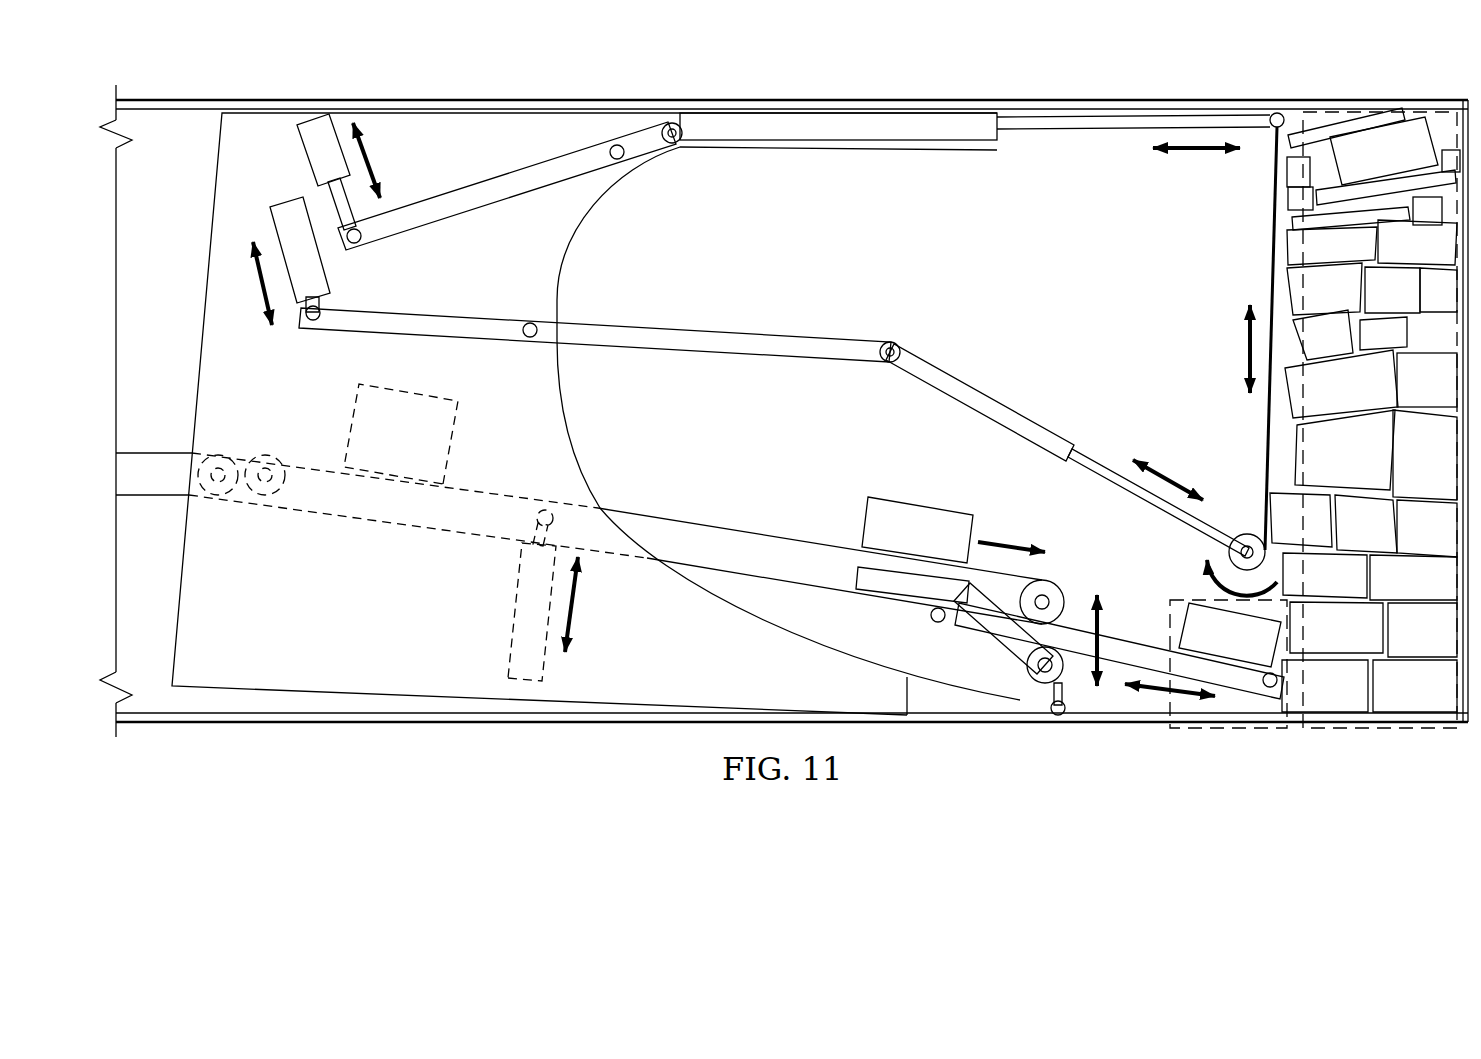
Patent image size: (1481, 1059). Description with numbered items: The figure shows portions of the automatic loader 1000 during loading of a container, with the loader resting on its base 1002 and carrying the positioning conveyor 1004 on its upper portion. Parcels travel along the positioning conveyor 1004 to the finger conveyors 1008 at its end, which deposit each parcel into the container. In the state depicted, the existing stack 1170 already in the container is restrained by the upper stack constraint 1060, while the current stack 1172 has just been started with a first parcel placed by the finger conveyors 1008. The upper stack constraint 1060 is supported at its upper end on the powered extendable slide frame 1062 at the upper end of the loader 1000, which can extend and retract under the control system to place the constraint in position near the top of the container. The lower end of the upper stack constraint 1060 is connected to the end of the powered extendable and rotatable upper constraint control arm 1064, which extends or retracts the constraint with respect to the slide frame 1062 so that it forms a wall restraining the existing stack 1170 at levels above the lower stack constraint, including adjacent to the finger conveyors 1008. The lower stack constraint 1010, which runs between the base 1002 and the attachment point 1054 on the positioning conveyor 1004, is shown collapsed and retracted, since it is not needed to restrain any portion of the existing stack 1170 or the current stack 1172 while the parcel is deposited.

The automatic loader 1000 is at (270, 88).
The base 1002 is at (213, 205).
The positioning conveyor 1004 is at (770, 537).
The finger conveyors 1008 is at (1127, 638).
The lower stack constraint 1010 is at (1063, 685).
The attachment point 1054 is at (1025, 676).
The upper stack constraint 1060 is at (1270, 285).
The powered extendable slide frame 1062 is at (1073, 130).
The upper constraint control arm 1064 is at (757, 330).
The existing stack 1170 is at (1392, 734).
The current stack 1172 is at (1228, 734).